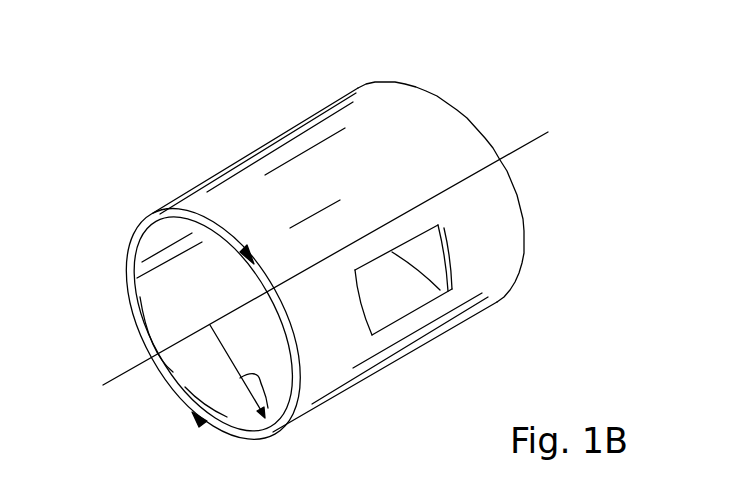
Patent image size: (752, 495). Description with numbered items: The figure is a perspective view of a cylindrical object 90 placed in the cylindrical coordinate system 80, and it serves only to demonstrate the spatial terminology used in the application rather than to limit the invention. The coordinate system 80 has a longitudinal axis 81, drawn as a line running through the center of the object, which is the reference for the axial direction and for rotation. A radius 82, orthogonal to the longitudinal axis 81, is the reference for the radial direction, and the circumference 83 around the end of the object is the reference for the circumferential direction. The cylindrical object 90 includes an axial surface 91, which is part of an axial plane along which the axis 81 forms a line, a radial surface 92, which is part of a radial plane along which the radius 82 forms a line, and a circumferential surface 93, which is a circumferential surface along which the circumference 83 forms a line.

The cylindrical coordinate system 80 is at (468, 98).
The longitudinal axis 81 is at (112, 383).
The radius 82 is at (285, 418).
The circumference 83 is at (130, 238).
The cylindrical object 90 is at (357, 84).
The axial surface 91 is at (421, 296).
The radial surface 92 is at (223, 428).
The circumferential surface 93 is at (302, 170).